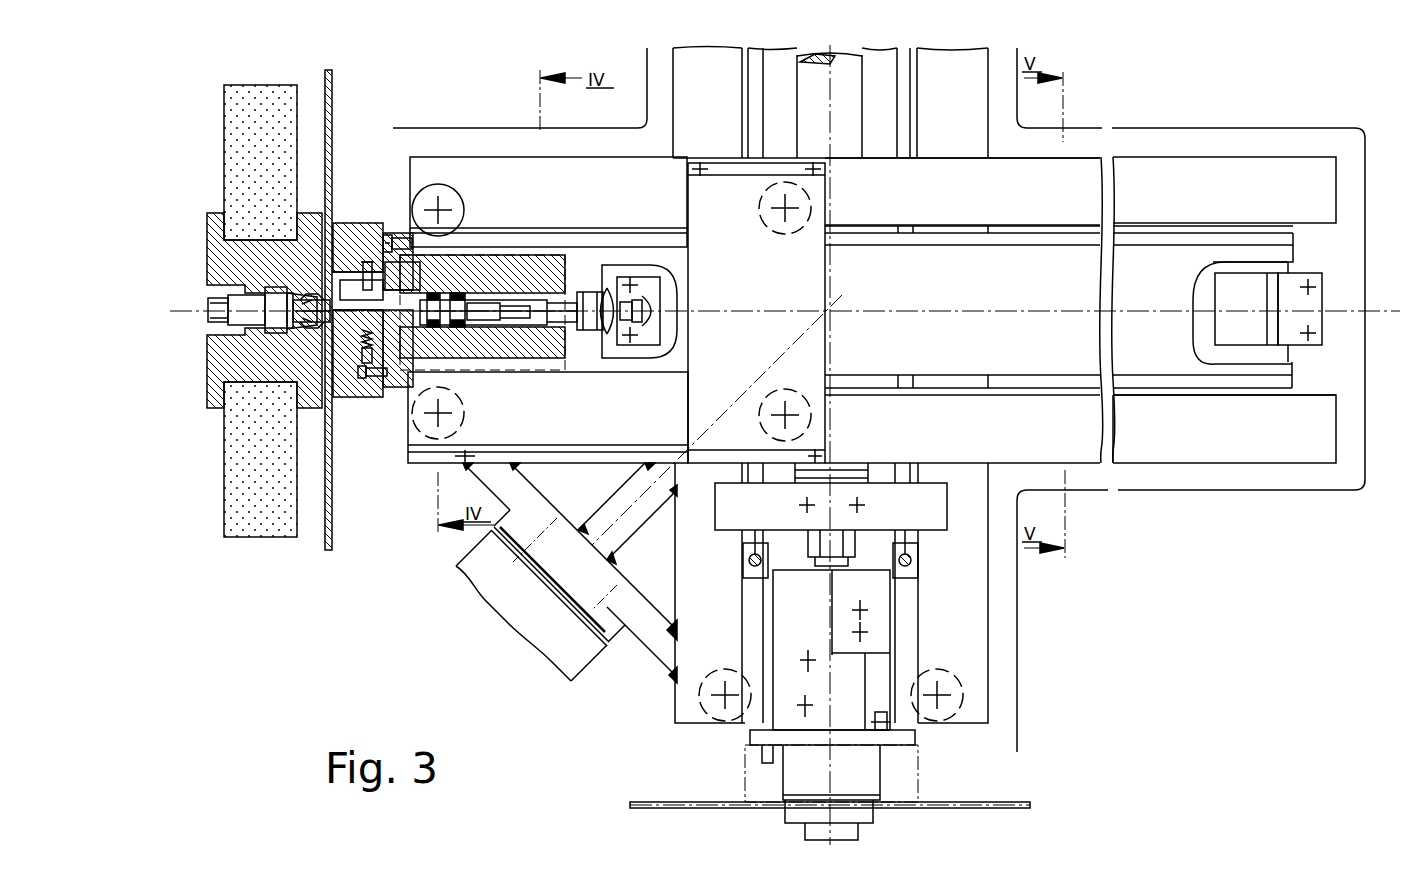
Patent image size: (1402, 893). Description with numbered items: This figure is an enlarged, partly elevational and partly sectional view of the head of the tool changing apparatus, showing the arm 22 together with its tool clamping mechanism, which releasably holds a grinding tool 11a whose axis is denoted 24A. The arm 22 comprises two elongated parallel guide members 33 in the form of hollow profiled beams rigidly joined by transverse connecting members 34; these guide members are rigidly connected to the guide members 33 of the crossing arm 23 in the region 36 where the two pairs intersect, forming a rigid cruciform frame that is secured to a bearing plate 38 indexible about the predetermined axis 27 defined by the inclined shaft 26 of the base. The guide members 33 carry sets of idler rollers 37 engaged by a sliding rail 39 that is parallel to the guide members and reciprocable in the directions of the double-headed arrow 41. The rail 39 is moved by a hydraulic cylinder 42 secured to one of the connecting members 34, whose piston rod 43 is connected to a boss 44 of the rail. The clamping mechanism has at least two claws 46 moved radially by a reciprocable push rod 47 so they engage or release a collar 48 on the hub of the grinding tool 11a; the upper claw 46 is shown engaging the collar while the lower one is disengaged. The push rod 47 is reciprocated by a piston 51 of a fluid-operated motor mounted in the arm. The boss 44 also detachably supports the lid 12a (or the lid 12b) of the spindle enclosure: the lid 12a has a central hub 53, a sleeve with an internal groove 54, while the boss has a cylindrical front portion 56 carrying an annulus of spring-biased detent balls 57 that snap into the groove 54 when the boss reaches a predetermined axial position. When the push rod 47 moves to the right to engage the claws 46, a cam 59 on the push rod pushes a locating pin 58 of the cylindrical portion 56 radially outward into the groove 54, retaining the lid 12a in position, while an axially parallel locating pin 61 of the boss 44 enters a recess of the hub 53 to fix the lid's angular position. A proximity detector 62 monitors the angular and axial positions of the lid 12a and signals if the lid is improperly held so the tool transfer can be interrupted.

The grinding tool 11a is at (268, 538).
The lid 12a is at (327, 76).
The lid 12b is at (1015, 801).
The arm 22 is at (1197, 127).
The arm 23 is at (1020, 640).
The spindle shaft 24A is at (232, 311).
The inclined shaft 26 is at (566, 665).
The predetermined axis 27 is at (507, 634).
The guide members 33 is at (1285, 176).
The connecting members 34 is at (1313, 248).
The region 36 is at (1010, 203).
The idler rollers 37 is at (441, 206).
The bearing plate 38 is at (642, 626).
The sliding rail 39 is at (1145, 357).
The double-headed arrow 41 is at (1048, 275).
The hydraulic cylinder 42 is at (1205, 328).
The piston rod 43 is at (646, 295).
The boss 44 is at (373, 490).
The claws 46 is at (296, 318).
The push rod 47 is at (515, 305).
The collar 48 is at (256, 274).
The piston 51 is at (452, 296).
The hub 53 is at (338, 240).
The internal groove 54 is at (373, 258).
The cylindrical front portion 56 is at (345, 347).
The balls 57 is at (366, 372).
The locating pin 58 is at (368, 262).
The cam 59 is at (410, 272).
The locating pin 61 is at (380, 378).
The proximity detector 62 is at (392, 236).